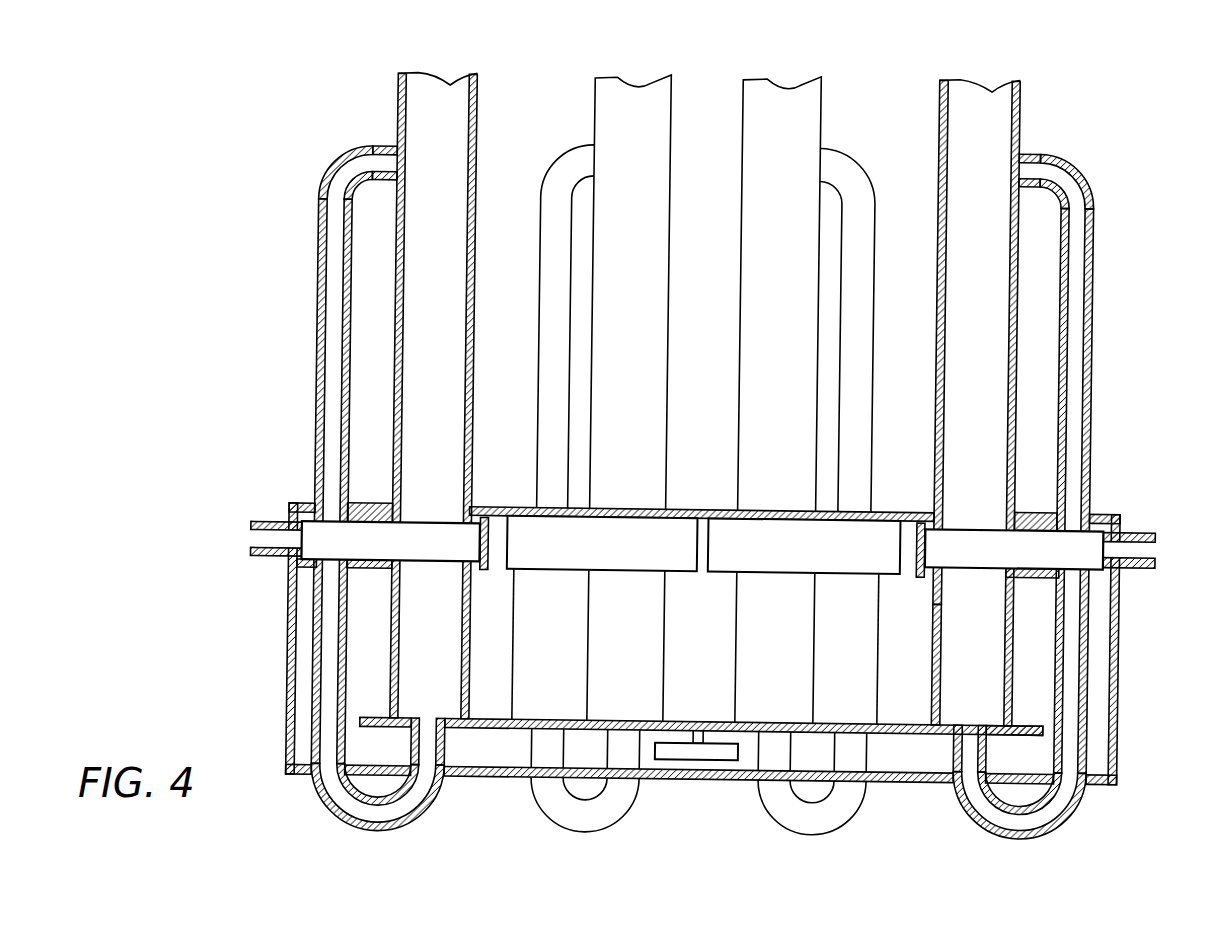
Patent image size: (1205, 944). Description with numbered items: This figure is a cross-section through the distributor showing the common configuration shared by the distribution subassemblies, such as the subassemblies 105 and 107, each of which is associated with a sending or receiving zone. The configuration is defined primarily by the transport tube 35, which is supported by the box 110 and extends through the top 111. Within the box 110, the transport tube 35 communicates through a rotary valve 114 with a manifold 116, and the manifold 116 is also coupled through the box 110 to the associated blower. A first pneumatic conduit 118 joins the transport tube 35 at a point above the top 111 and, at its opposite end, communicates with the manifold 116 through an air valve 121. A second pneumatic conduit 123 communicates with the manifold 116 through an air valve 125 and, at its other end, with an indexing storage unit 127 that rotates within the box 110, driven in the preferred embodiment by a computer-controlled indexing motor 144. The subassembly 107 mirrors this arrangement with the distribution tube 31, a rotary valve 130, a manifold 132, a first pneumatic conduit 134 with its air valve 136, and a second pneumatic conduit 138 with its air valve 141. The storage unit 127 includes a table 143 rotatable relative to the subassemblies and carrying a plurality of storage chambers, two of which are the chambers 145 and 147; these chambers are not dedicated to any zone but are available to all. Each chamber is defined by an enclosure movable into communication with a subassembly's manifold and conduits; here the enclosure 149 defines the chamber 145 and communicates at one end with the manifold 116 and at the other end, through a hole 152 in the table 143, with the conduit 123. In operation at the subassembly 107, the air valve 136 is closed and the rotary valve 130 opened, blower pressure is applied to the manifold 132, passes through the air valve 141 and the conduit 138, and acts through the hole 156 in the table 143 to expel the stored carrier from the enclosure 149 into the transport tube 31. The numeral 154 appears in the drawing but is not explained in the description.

The distribution tube 31 is at (394, 121).
The transport tube 35 is at (1015, 134).
The subassembly 105 is at (1122, 118).
The subassembly 107 is at (296, 167).
The box 110 is at (292, 656).
The top 111 is at (683, 507).
The rotary valve 114 is at (978, 522).
The manifold 116 is at (1089, 571).
The first pneumatic conduit 118 is at (1091, 250).
The air valve 121 is at (1073, 522).
The second pneumatic conduit 123 is at (1091, 727).
The air valve 125 is at (1089, 624).
The indexing storage unit 127 is at (1062, 774).
The rotary valve 130 is at (434, 524).
The manifold 132 is at (371, 571).
The first pneumatic conduit 134 is at (317, 375).
The air valve 136 is at (333, 501).
The second pneumatic conduit 138 is at (316, 701).
The air valve 141 is at (339, 565).
The table 143 is at (934, 741).
The indexing motor 144 is at (691, 752).
The storage chamber 145 is at (940, 693).
The storage chamber 147 is at (445, 682).
The enclosure 149 is at (934, 628).
The hole 152 is at (972, 638).
The support wall 154 is at (472, 655).
The hole 156 is at (414, 716).